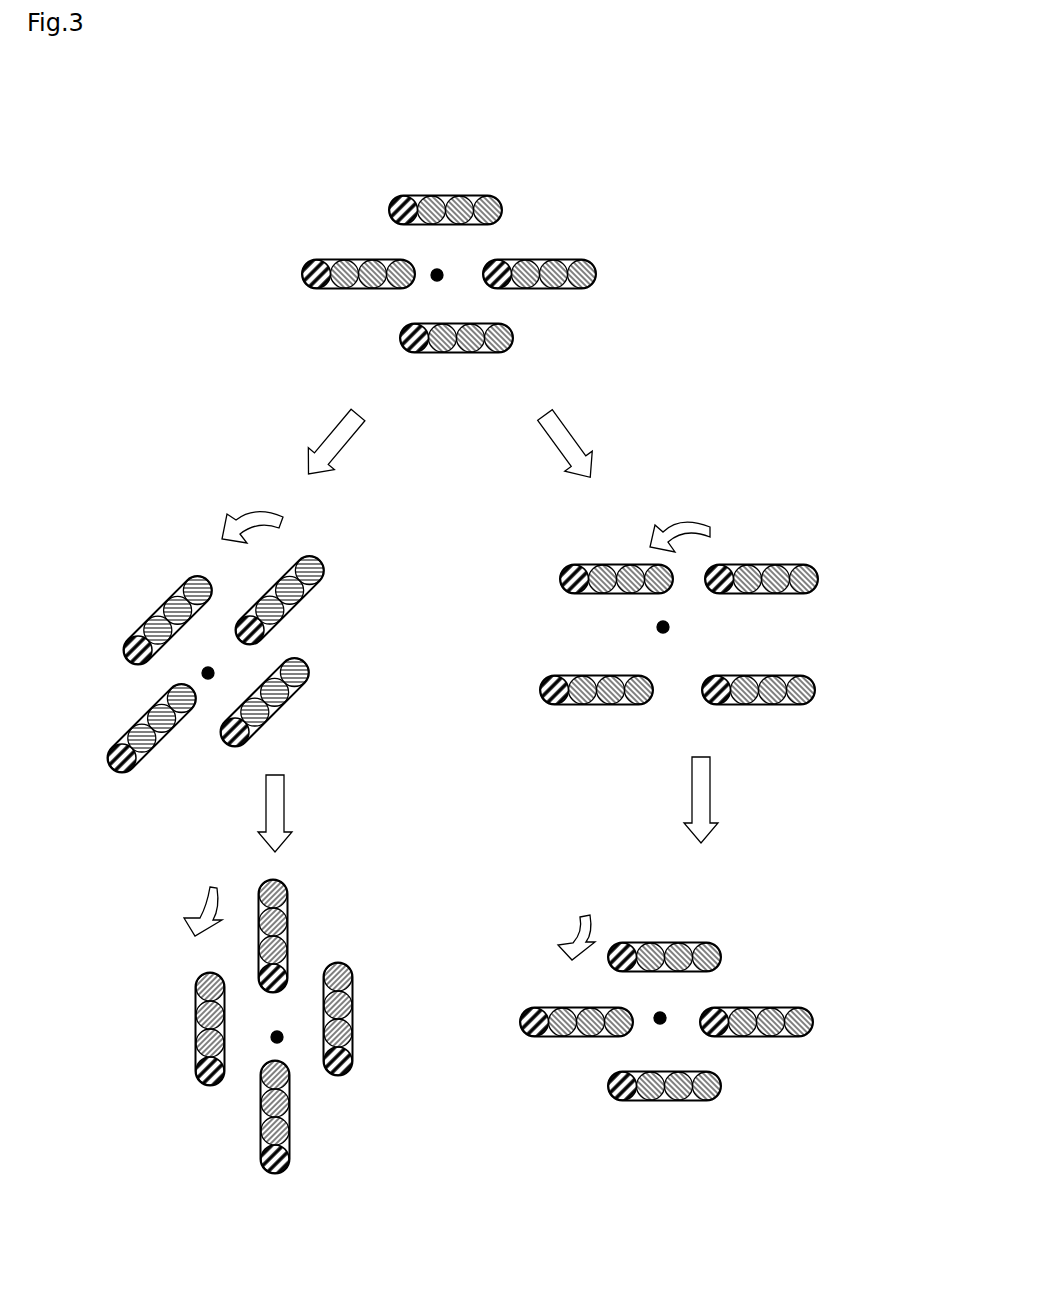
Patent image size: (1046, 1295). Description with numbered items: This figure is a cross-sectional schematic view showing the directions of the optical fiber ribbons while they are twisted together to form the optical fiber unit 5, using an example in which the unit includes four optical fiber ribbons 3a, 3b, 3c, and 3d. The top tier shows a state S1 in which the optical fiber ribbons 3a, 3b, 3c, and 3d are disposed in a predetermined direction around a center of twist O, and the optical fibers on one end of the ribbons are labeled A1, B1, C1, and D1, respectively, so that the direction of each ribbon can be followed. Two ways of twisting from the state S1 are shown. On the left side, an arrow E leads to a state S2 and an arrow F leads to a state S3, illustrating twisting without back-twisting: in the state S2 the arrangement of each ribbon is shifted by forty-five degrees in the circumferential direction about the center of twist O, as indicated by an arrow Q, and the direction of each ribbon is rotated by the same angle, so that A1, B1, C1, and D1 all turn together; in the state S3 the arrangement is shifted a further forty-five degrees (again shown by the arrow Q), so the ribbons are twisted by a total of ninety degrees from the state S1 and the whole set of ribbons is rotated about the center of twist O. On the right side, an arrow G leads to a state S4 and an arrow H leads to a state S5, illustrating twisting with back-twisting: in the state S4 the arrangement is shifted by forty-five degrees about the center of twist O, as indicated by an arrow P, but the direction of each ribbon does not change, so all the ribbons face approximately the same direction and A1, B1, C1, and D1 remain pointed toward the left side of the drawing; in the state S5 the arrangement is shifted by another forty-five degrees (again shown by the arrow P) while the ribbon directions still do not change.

The optical fiber ribbon 3a is at (392, 260).
The optical fiber ribbon 3b is at (403, 327).
The optical fiber ribbon 3c is at (588, 286).
The optical fiber ribbon 3d is at (502, 219).
The optical fiber on one end of optical fiber ribbon 3a A1 is at (306, 264).
The optical fiber on one end of optical fiber ribbon 3b B1 is at (416, 352).
The optical fiber on one end of optical fiber ribbon 3c C1 is at (499, 289).
The optical fiber on one end of optical fiber ribbon 3d D1 is at (394, 197).
The center of twist O is at (444, 654).
The optical fiber unit 5 is at (558, 192).
The state S1 is at (494, 143).
The state S2 is at (356, 589).
The state S3 is at (381, 902).
The state S4 is at (806, 540).
The state S5 is at (777, 907).
The arrow E is at (330, 444).
The arrow F is at (282, 813).
The arrow G is at (567, 446).
The arrow H is at (705, 800).
The arrow P is at (626, 728).
The arrow Q is at (225, 709).